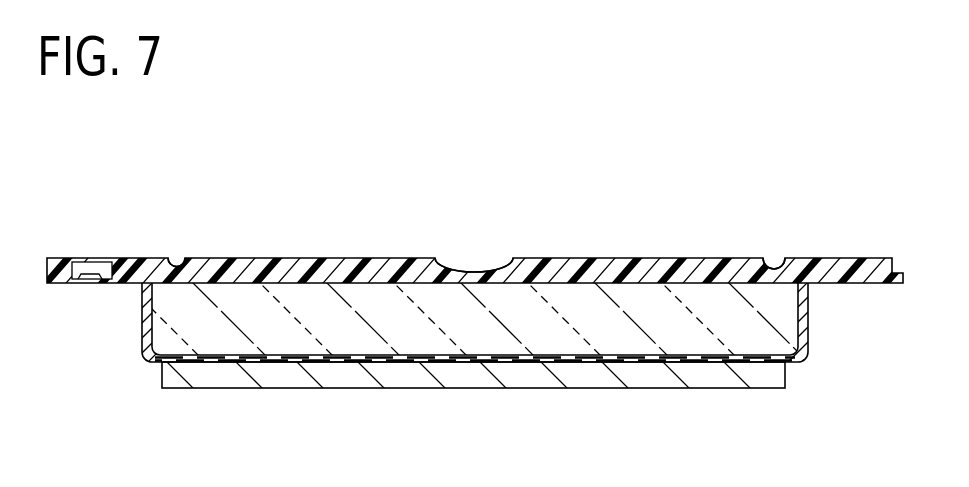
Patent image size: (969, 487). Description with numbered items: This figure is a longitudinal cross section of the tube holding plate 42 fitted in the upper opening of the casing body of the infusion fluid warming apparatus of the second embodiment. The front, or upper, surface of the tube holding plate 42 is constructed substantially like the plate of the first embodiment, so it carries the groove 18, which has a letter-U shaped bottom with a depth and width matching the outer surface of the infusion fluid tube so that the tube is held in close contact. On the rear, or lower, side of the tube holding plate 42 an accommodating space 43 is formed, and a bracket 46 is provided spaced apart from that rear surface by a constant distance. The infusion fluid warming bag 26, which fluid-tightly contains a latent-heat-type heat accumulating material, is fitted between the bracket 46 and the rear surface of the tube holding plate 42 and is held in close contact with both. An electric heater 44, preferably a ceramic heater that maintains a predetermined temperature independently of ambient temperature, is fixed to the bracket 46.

The groove 18 is at (179, 268).
The infusion fluid warming bag 26 is at (190, 335).
The tube holding plate 42 is at (658, 268).
The accommodating space 43 is at (810, 288).
The electric heater 44 is at (463, 381).
The bracket 46 is at (608, 362).